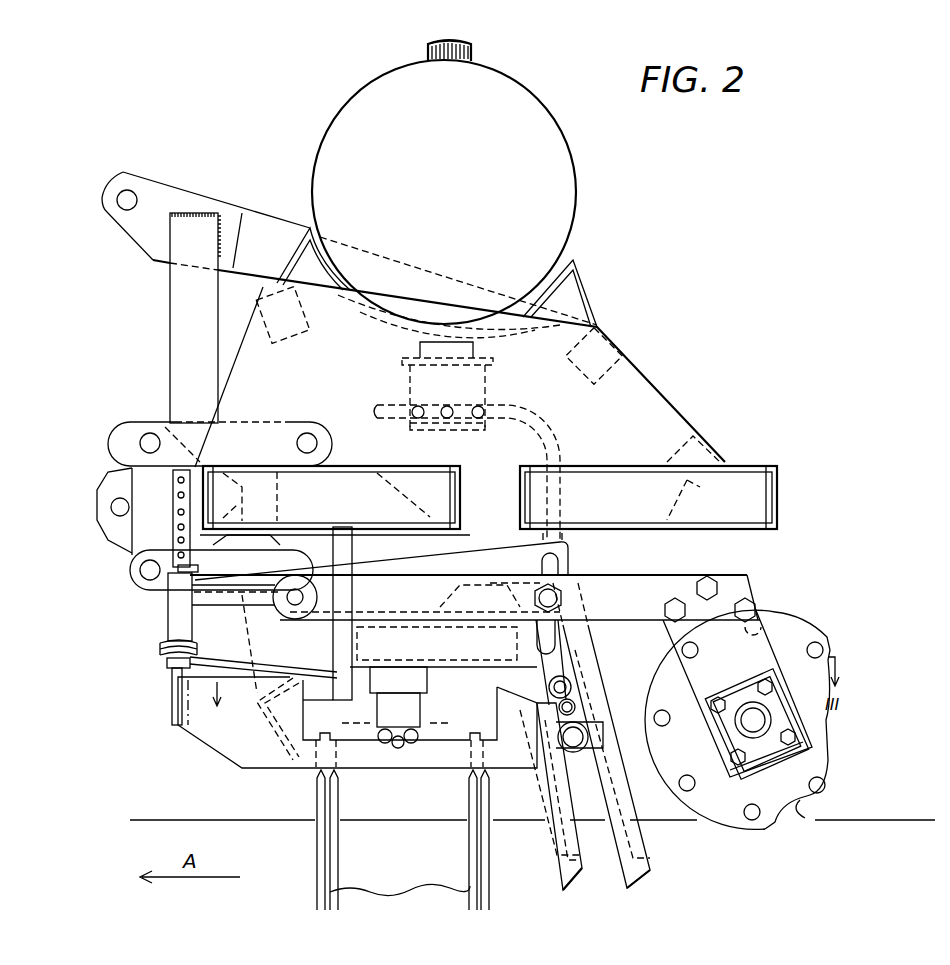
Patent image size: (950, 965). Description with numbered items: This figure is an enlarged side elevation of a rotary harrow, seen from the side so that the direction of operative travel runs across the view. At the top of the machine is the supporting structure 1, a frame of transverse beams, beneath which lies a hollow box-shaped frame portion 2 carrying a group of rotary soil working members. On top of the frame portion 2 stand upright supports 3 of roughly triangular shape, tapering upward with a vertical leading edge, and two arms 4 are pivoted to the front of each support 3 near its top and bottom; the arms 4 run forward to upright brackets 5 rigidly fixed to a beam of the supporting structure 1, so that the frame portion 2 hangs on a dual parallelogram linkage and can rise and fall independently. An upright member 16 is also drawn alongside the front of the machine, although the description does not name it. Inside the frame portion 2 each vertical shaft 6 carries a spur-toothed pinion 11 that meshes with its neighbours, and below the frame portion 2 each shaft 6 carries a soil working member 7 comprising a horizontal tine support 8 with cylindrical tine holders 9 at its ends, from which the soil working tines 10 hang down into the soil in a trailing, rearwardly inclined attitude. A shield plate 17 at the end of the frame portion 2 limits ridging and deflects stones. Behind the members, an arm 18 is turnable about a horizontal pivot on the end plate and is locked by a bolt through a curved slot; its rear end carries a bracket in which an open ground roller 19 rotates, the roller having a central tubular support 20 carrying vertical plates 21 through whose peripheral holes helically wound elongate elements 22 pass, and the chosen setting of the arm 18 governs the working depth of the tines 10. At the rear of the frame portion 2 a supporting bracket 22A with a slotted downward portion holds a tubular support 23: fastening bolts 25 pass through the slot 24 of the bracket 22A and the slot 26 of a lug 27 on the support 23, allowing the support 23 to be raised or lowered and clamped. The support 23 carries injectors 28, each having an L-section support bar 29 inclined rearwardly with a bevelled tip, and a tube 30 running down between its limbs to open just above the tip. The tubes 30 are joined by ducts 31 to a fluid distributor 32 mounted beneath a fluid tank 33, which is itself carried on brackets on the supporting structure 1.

The supporting structure 1 is at (700, 395).
The frame portion 2 is at (303, 626).
The upright support 3 is at (355, 463).
The arm 4 is at (270, 423).
The upright bracket 5 is at (133, 478).
The shaft 6 is at (400, 753).
The soil working member 7 is at (311, 806).
The tine support 8 is at (399, 753).
The tine holder 9 is at (307, 712).
The soil working tine 10 is at (532, 859).
The toothed pinion 11 is at (370, 625).
The support arm 16 is at (170, 338).
The shield plate 17 is at (237, 757).
The arm 18 is at (662, 568).
The ground roller 19 is at (812, 613).
The tubular support 20 is at (753, 700).
The plate 21 is at (731, 830).
The elongate element 22 is at (806, 820).
The supporting bracket 22A is at (560, 678).
The tubular support 23 is at (580, 755).
The slot 24 is at (566, 679).
The fastening bolt 25 is at (570, 700).
The slot 26 is at (420, 683).
The lug 27 is at (578, 712).
The injector 28 is at (558, 891).
The support bar 29 is at (557, 866).
The tube 30 is at (575, 846).
The duct 31 is at (557, 433).
The fluid distributor 32 is at (403, 378).
The fluid container or tank 33 is at (578, 187).